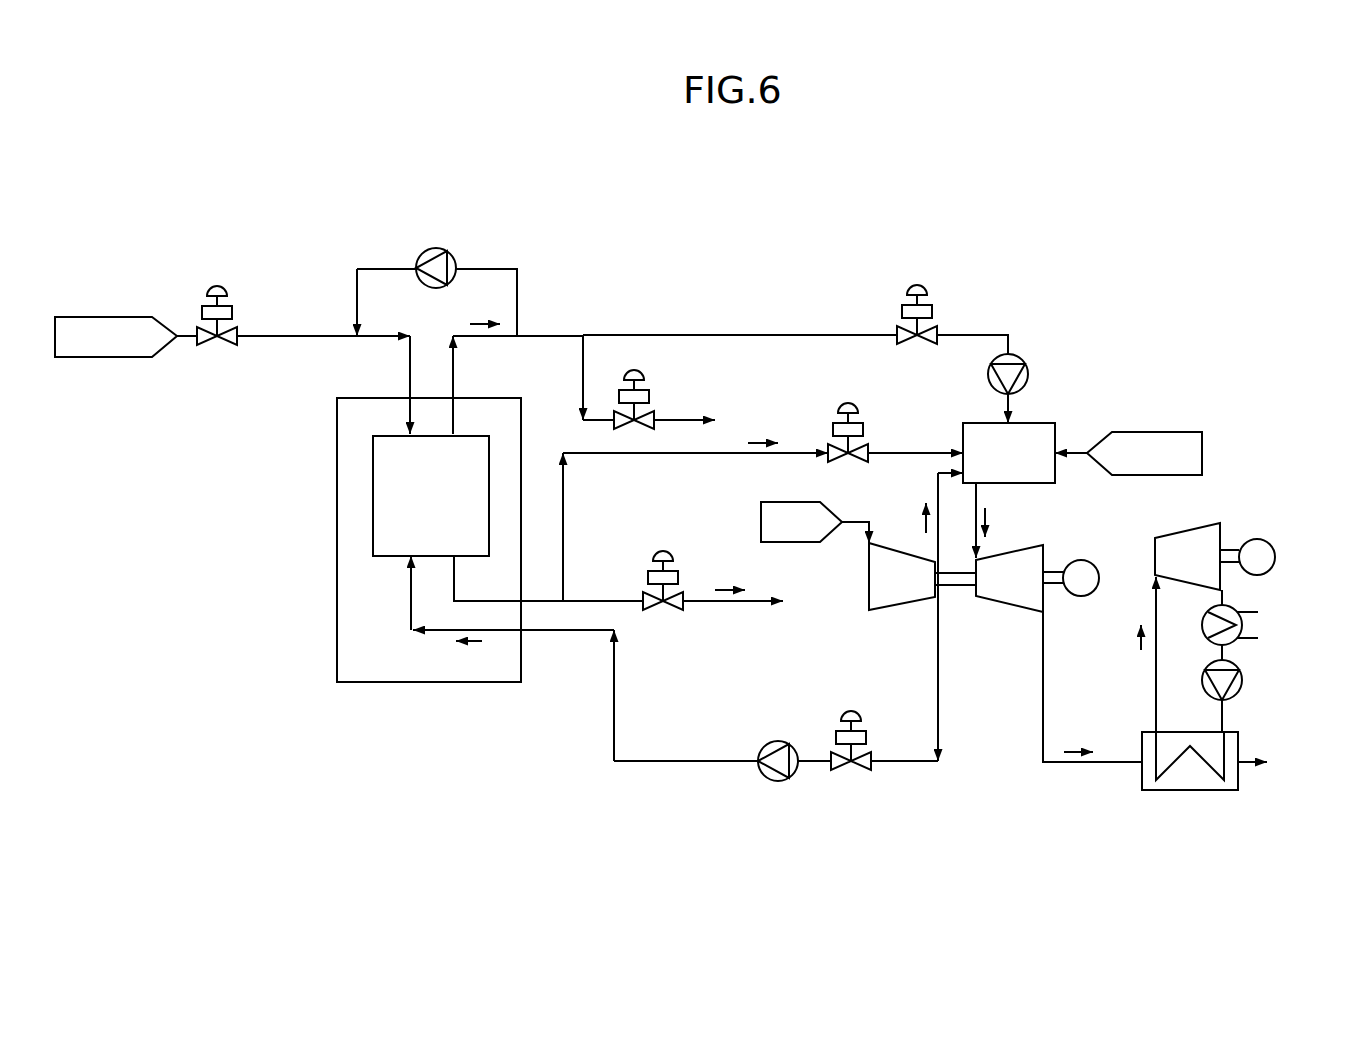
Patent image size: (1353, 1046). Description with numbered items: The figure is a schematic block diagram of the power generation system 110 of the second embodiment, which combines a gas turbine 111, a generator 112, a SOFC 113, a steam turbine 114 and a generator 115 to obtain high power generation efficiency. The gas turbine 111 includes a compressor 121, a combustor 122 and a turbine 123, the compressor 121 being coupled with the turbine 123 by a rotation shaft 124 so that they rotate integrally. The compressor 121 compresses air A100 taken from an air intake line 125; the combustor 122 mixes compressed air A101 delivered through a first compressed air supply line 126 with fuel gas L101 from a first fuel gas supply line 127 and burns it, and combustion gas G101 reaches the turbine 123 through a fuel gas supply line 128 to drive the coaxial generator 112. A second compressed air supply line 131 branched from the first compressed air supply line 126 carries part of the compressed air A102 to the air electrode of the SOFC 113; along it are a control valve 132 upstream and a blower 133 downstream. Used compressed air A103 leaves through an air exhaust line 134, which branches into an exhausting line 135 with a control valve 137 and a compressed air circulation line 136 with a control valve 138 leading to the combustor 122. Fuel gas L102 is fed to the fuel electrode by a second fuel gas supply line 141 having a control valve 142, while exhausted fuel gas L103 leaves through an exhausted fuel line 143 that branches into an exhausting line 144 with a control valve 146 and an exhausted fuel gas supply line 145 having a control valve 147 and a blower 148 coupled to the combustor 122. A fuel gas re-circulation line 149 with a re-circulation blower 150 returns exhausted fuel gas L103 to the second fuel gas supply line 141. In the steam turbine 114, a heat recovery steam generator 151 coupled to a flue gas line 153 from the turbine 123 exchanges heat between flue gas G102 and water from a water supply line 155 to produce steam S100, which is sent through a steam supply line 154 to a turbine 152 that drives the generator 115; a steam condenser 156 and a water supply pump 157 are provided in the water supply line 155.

The power generation system 110 is at (669, 206).
The gas turbine 111 is at (1056, 549).
The generator 112 is at (1077, 597).
The SOFC 113 is at (468, 437).
The steam turbine 114 is at (1233, 519).
The generator 115 is at (1260, 540).
The compressor 121 is at (888, 611).
The combustor 122 is at (1027, 422).
The turbine 123 is at (1003, 603).
The rotation shaft 124 is at (954, 590).
The air intake line 125 is at (850, 518).
The first compressed air supply line 126 is at (935, 482).
The first fuel gas supply line 127 is at (1083, 452).
The fuel gas supply line 128 is at (978, 497).
The second compressed air supply line 131 is at (713, 766).
The control valve 132 is at (850, 710).
The blower 133 is at (769, 741).
The air exhaust line 134 is at (456, 577).
The exhausting line 135 is at (595, 597).
The compressed air circulation line 136 is at (748, 458).
The control valve 137 is at (654, 555).
The control valve 138 is at (850, 404).
The second fuel gas supply line 141 is at (304, 334).
The control valve 142 is at (218, 285).
The exhausted fuel line 143 is at (493, 338).
The exhausting line 144 is at (692, 418).
The exhausted fuel gas supply line 145 is at (750, 332).
The control valve 146 is at (640, 378).
The control valve 147 is at (917, 280).
The blower 148 is at (1012, 359).
The fuel gas re-circulation line 149 is at (513, 267).
The re-circulation blower 150 is at (434, 251).
The heat recovery steam generator 151 is at (1190, 795).
The turbine 152 is at (1153, 558).
The flue gas line 153 is at (1057, 767).
The steam supply line 154 is at (1154, 701).
The water supply line 155 is at (1224, 721).
The steam condenser 156 is at (1233, 605).
The water supply pump 157 is at (1233, 660).
The fuel gas L101 is at (1146, 431).
The fuel gas L102 is at (107, 314).
The exhausted fuel gas L103 is at (481, 320).
The air A100 is at (785, 502).
The compressed air A101 is at (924, 518).
The compressed air A102 is at (472, 646).
The compressed air A103 is at (756, 443).
The combustion gas G101 is at (992, 521).
The flue gas G102 is at (1070, 748).
The steam S100 is at (1138, 648).